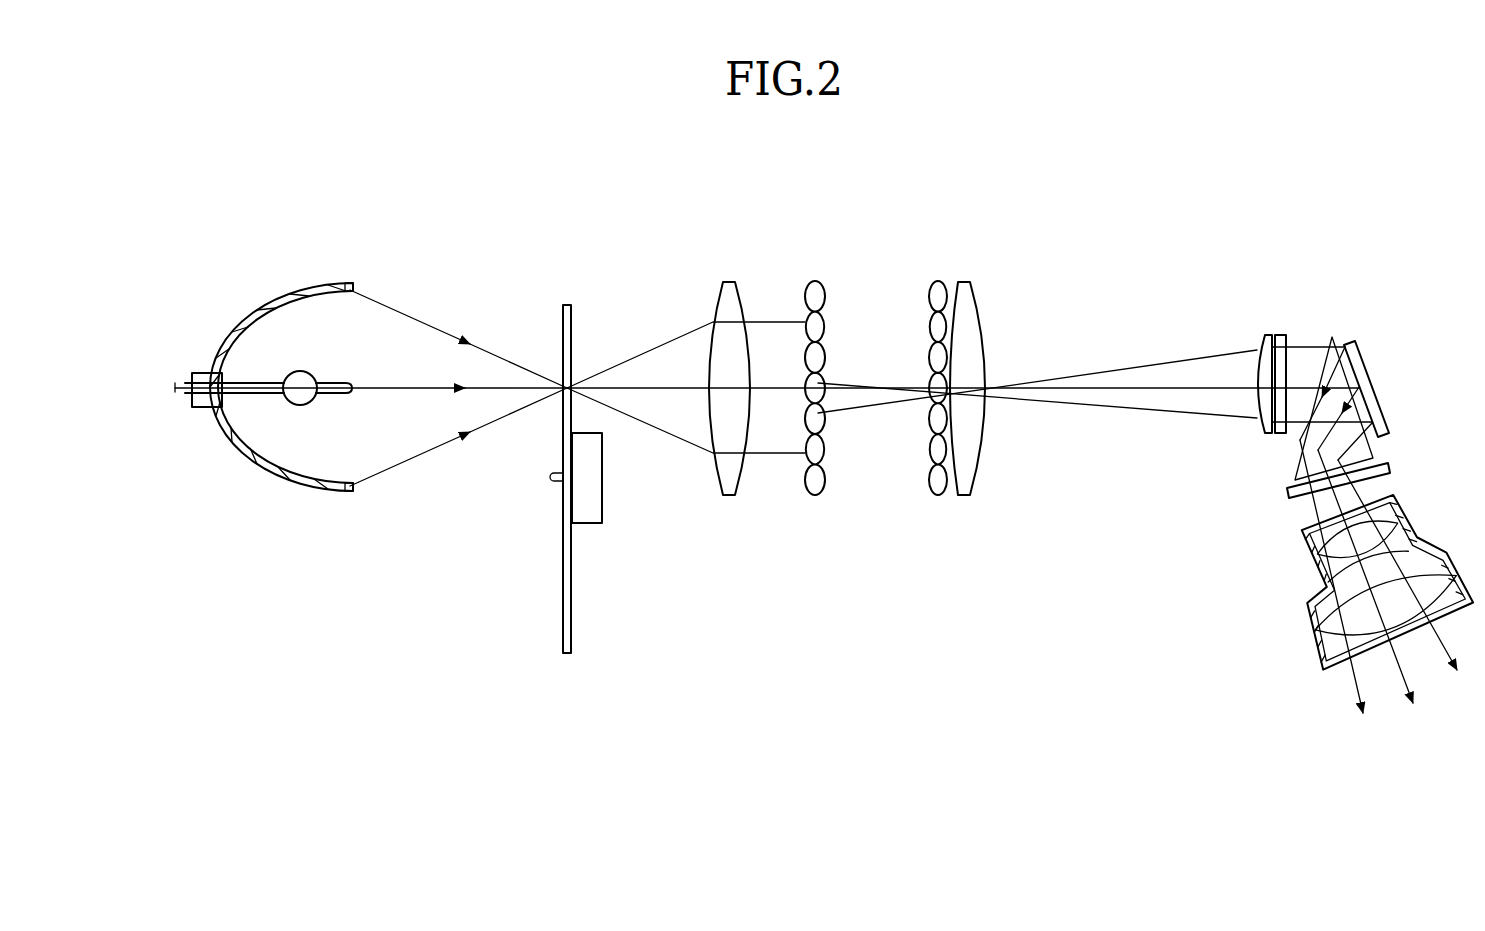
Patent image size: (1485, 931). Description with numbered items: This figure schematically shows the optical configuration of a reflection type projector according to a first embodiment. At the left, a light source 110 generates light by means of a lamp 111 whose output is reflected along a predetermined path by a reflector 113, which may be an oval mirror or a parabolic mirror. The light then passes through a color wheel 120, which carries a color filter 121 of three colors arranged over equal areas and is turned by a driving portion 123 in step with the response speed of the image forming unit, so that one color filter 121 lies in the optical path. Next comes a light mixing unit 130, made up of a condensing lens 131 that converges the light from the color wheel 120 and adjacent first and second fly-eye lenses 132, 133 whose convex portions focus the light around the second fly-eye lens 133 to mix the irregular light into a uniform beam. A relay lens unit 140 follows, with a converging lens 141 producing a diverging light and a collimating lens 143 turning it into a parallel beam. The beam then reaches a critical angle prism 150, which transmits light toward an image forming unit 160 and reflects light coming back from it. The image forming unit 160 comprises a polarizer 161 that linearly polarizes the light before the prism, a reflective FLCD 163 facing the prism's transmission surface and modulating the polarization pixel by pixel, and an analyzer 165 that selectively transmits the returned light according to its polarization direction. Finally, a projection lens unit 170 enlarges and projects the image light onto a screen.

The light source 110 is at (255, 390).
The lamp 111 is at (293, 405).
The reflector 113 is at (330, 483).
The color wheel 120 is at (554, 466).
The color filter 121 is at (565, 592).
The driving portion 123 is at (588, 517).
The light mixing unit 130 is at (820, 393).
The condensing lens 131 is at (723, 497).
The first fly-eye lens 132 is at (814, 497).
The second fly-eye lens 133 is at (938, 497).
The relay lens unit 140 is at (1111, 383).
The converging lens 141 is at (968, 492).
The collimating lens 143 is at (1262, 432).
The critical angle prism 150 is at (1328, 330).
The image forming unit 160 is at (1345, 404).
The polarizer 161 is at (1280, 435).
The ferroelectric liquid crystal display (FLCD) 163 is at (1392, 432).
The analyzer 165 is at (1392, 470).
The projection lens unit 170 is at (1297, 582).